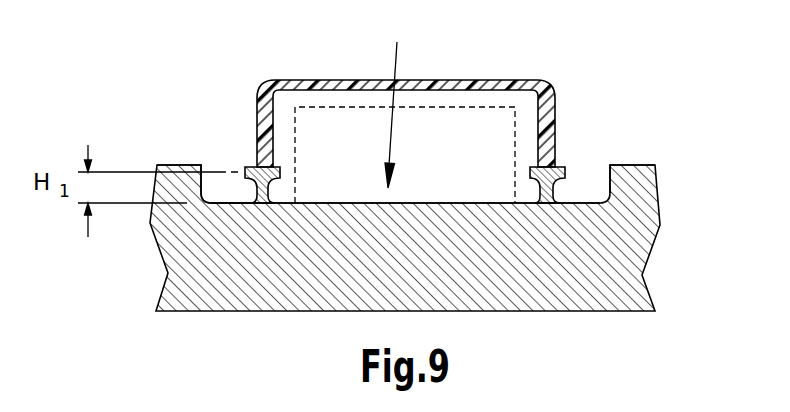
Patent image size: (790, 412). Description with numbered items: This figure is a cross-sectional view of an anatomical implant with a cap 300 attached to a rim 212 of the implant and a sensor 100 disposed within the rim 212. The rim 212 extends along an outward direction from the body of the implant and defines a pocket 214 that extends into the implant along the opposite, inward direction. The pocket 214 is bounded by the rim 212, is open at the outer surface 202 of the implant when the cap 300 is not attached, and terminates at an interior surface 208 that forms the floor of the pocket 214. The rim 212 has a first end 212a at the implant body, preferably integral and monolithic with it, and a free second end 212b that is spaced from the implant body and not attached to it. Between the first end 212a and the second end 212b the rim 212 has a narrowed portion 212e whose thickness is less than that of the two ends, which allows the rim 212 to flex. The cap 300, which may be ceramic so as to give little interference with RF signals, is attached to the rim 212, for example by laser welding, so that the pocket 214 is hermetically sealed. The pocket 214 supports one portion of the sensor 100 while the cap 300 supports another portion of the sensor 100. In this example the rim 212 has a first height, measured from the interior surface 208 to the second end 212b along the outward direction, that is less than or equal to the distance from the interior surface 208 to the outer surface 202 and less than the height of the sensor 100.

The sensor 100 is at (334, 107).
The outer surface 202 is at (178, 165).
The interior surface 208 is at (433, 203).
The rim 212 is at (563, 170).
The first end 212a is at (262, 203).
The second end 212b is at (255, 170).
The narrowed portion 212e is at (553, 193).
The pocket 214 is at (402, 98).
The cap 300 is at (468, 82).